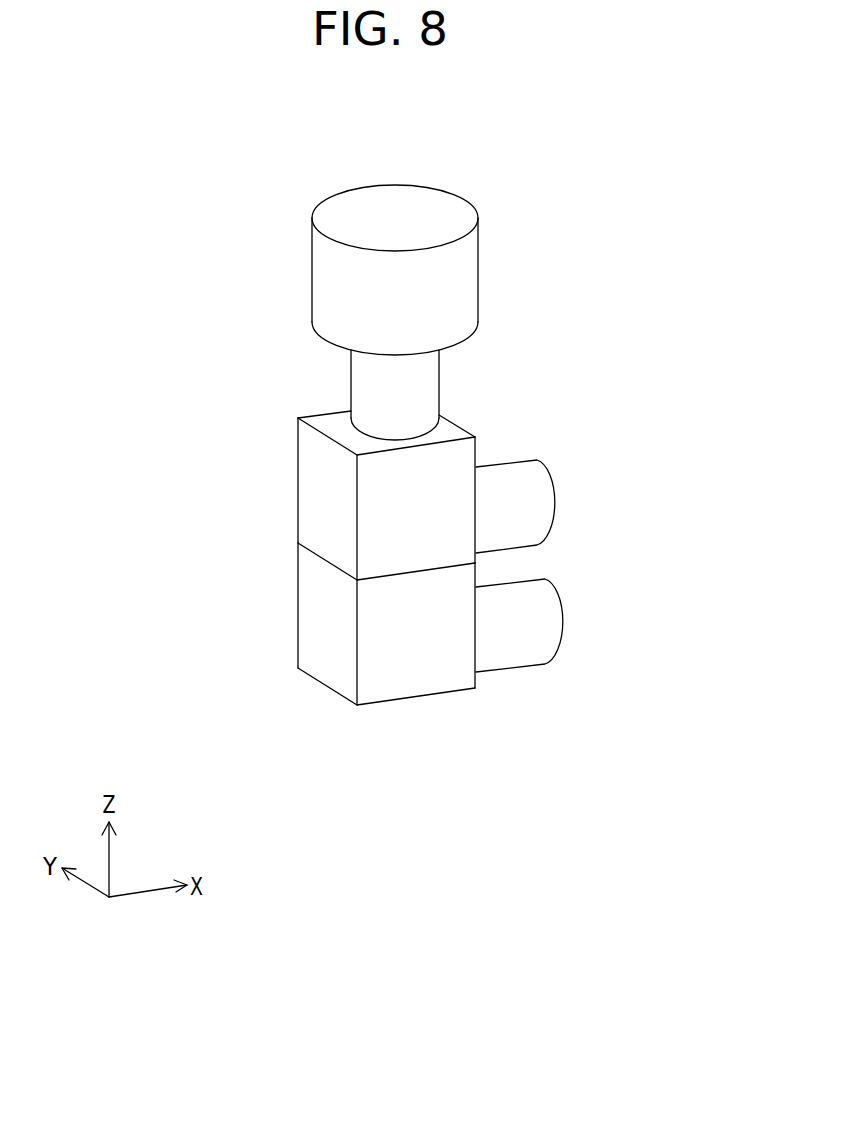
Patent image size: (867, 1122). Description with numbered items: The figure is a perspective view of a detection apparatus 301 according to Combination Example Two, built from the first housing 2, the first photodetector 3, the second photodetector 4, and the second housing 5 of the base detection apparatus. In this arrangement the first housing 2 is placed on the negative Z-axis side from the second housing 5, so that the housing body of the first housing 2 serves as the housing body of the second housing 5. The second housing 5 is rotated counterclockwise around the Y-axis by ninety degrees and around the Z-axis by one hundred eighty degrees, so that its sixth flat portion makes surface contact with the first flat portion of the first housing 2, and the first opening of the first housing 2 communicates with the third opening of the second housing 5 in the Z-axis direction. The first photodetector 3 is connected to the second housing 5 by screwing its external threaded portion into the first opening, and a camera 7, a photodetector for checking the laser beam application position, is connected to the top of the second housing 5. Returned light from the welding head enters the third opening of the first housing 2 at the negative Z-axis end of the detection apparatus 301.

The detection apparatus 301 is at (699, 187).
The camera 7 is at (455, 287).
The second housing 5 is at (322, 488).
The first housing 2 is at (322, 625).
The first photodetector 3 is at (537, 488).
The second photodetector 4 is at (537, 626).